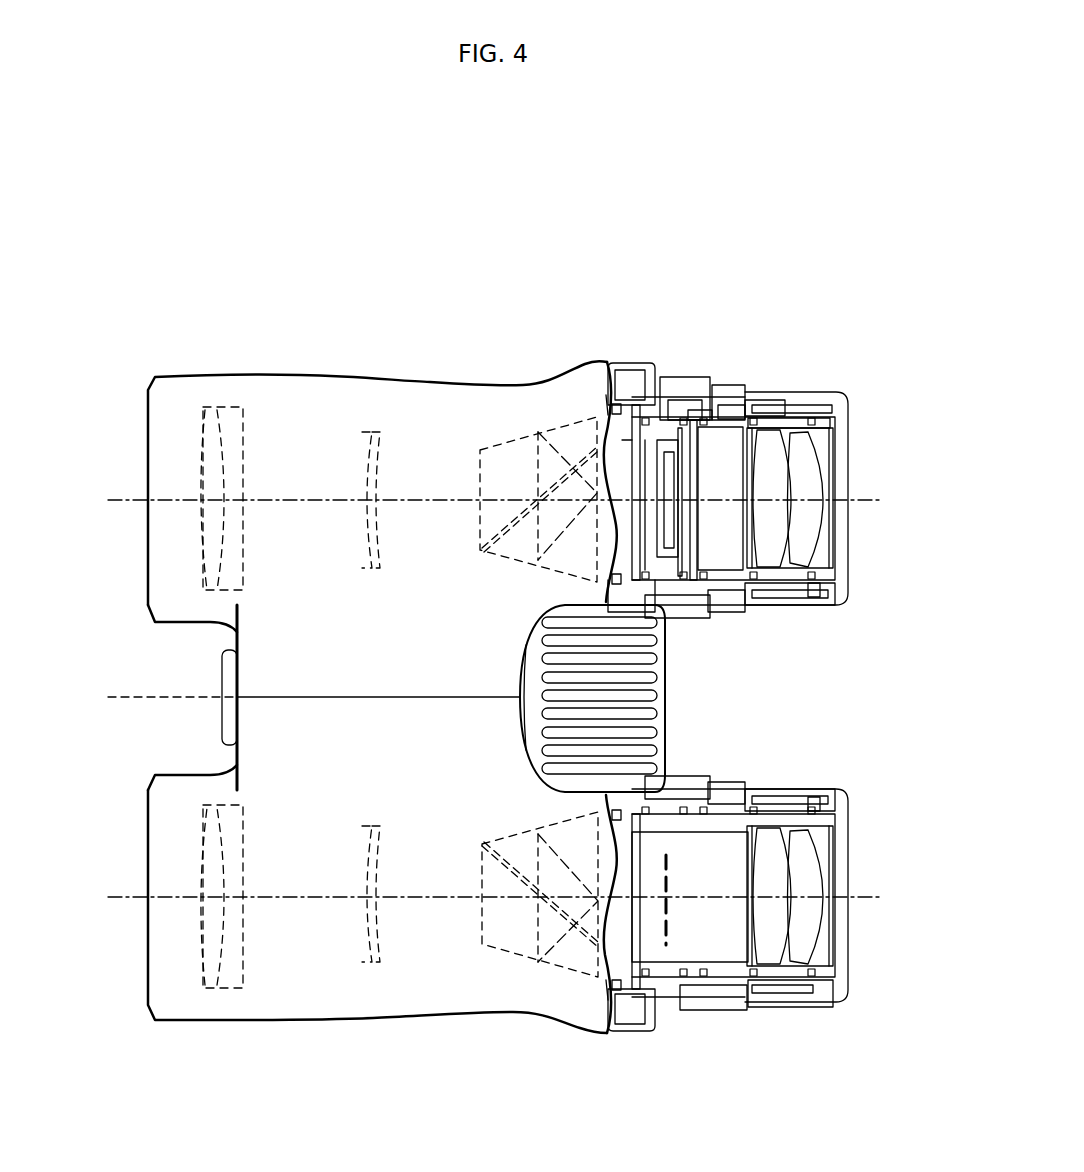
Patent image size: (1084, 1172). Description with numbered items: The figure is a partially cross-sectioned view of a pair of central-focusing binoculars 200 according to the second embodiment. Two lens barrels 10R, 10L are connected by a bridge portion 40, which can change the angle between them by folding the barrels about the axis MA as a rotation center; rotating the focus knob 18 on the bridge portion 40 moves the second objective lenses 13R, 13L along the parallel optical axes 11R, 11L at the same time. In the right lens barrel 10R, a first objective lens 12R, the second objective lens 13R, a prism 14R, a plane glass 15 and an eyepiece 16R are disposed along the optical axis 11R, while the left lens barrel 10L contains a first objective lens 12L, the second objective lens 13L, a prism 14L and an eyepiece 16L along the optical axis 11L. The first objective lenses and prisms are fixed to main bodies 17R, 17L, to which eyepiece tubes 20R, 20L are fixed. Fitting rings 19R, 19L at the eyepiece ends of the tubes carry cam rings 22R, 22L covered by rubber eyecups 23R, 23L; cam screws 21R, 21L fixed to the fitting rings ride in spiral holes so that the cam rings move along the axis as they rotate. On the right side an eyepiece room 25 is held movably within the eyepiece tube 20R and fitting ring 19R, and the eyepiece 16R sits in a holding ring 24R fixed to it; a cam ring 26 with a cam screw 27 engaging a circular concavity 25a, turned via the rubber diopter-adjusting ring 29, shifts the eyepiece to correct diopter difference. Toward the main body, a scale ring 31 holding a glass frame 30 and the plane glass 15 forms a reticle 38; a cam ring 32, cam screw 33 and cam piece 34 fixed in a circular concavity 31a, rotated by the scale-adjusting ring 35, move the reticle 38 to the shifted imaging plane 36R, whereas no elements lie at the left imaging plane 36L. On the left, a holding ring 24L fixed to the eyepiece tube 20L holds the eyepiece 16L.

The binoculars 200 is at (481, 258).
The lens barrel 10R is at (300, 370).
The lens barrel 10L is at (293, 1027).
The optical axis 11R is at (122, 498).
The optical axis 11L is at (130, 898).
The first objective lens 12R is at (232, 408).
The first objective lens 12L is at (228, 995).
The second objective lens 13R is at (370, 455).
The second objective lens 13L is at (372, 968).
The prism 14R is at (500, 437).
The prism 14L is at (503, 962).
The plane glass 15 is at (668, 488).
The eyepiece 16R is at (813, 478).
The eyepiece 16L is at (816, 860).
The main body 17R is at (607, 407).
The main body 17L is at (627, 975).
The focus knob 18 is at (660, 725).
The fitting ring 19R is at (818, 424).
The fitting ring 19L is at (782, 988).
The eyepiece tube 20R is at (622, 420).
The eyepiece tube 20L is at (645, 980).
The cam screw 21R is at (813, 597).
The cam screw 21L is at (845, 803).
The cam ring 22R is at (787, 598).
The cam ring 22L is at (793, 793).
The rubber eyecup 23R is at (763, 603).
The rubber eyecup 23L is at (767, 790).
The holding ring 24R is at (838, 445).
The holding ring 24L is at (830, 973).
The eyepiece room 25 is at (800, 408).
The circular concavity 25a is at (718, 428).
The cam ring 26 is at (745, 417).
The cam screw 27 is at (778, 420).
The diopter-adjusting ring 29 is at (740, 405).
The glass frame 30 is at (678, 553).
The scale ring 31 is at (653, 572).
The circular concavity 31a is at (628, 440).
The cam ring 32 is at (710, 420).
The cam screw 33 is at (660, 417).
The cam piece 34 is at (692, 412).
The scale-adjusting ring 35 is at (682, 400).
The imaging plane 36R is at (663, 523).
The imaging plane 36L is at (668, 923).
The reticle 38 is at (655, 517).
The bridge portion 40 is at (258, 762).
The axis MA is at (153, 695).